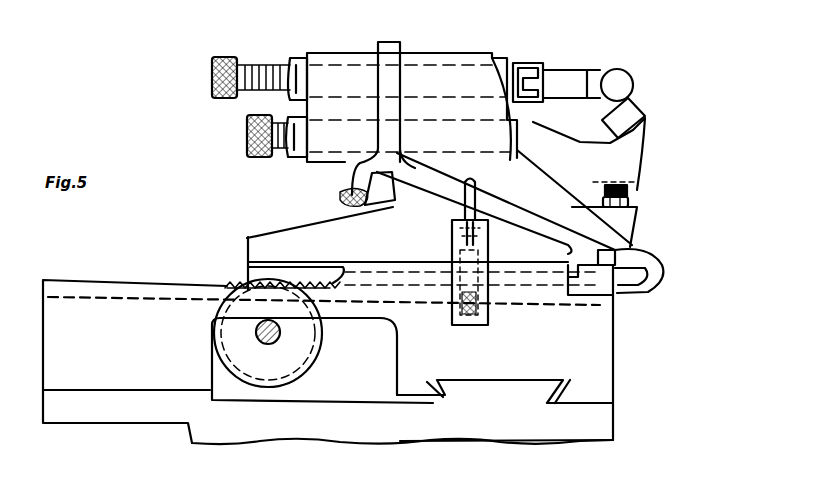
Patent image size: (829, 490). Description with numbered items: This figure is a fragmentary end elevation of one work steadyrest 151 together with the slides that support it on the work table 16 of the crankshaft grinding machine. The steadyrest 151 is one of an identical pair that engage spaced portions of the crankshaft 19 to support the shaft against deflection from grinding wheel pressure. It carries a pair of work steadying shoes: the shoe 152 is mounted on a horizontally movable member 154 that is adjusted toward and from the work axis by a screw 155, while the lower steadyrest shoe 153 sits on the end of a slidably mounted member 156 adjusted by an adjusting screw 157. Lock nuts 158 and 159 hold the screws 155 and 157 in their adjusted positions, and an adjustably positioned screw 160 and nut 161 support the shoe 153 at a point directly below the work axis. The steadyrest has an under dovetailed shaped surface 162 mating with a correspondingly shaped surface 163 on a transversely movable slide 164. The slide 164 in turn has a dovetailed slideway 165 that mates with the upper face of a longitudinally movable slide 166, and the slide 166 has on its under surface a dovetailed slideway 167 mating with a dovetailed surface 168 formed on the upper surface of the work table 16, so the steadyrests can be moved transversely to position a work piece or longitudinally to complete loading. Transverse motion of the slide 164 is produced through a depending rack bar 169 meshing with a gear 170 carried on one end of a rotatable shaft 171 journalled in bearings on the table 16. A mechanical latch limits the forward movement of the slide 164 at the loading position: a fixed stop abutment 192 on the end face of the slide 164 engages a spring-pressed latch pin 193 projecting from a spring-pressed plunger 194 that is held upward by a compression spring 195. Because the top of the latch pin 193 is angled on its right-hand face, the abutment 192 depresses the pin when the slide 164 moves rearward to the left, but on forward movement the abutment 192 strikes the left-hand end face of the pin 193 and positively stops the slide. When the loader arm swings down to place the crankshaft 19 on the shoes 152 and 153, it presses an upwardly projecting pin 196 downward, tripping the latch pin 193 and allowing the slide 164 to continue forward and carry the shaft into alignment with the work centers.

The work table 16 is at (358, 433).
The crankshaft 19 is at (613, 70).
The steadyrest 151 is at (380, 45).
The work steadying shoe 152 is at (590, 70).
The lower steadyrest shoe 153 is at (647, 117).
The horizontally movable member 154 is at (453, 65).
The screw 155 is at (262, 65).
The slidably mounted member 156 is at (473, 157).
The adjusting screw 157 is at (282, 160).
The lock nut 158 is at (297, 62).
The lock nut 159 is at (298, 162).
The adjustably positioned screw 160 is at (630, 190).
The nut 161 is at (628, 202).
The under dovetailed shaped surface 162 is at (660, 275).
The dovetailed surface 163 is at (420, 190).
The transversely movable slide 164 is at (257, 240).
The dovetailed slideway 165 is at (583, 308).
The longitudinally movable slide 166 is at (607, 352).
The dovetailed slideway 167 is at (492, 377).
The dovetailed surface 168 is at (527, 385).
The depending rack bar 169 is at (250, 275).
The gear 170 is at (237, 287).
The rotatable shaft 171 is at (278, 338).
The fixed stop abutment 192 is at (630, 253).
The spring-pressed latch pin 193 is at (475, 253).
The spring-pressed plunger 194 is at (468, 282).
The compression spring 195 is at (477, 313).
The upwardly projecting pin 196 is at (467, 208).